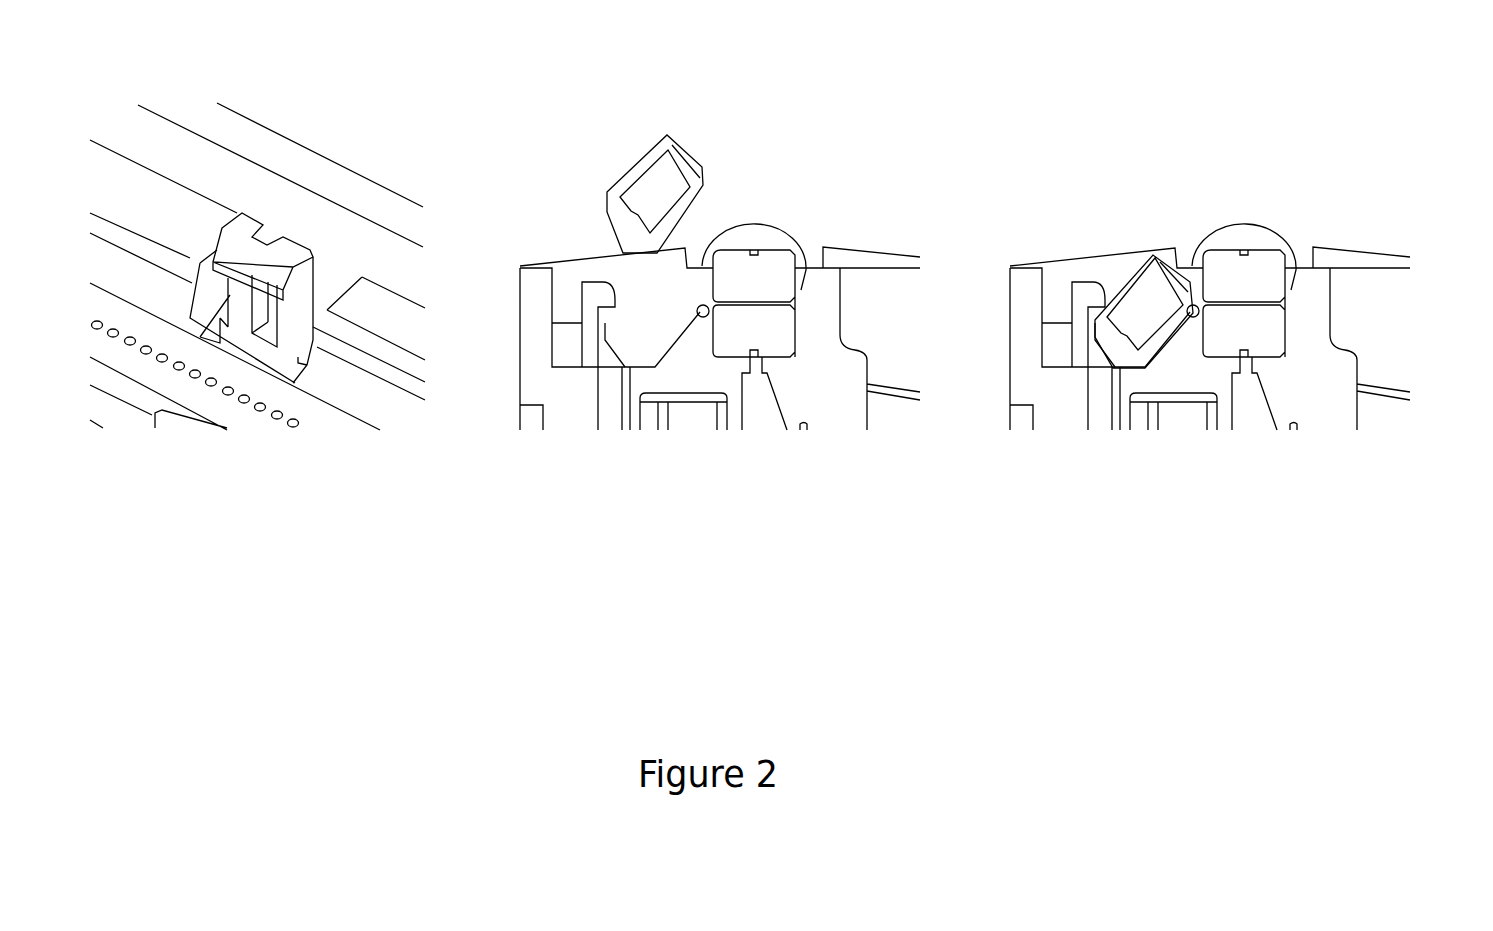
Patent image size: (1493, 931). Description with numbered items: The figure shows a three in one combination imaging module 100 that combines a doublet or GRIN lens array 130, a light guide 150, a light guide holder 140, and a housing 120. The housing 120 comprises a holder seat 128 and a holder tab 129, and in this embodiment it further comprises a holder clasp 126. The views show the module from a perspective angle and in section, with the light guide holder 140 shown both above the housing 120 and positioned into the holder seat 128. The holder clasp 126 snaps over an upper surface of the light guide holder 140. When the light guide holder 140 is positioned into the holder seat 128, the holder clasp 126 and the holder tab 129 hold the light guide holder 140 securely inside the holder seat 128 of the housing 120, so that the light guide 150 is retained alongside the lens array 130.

The three in one combination imaging module 100 is at (737, 92).
The housing 120 is at (233, 187).
The holder clasp 126 is at (255, 270).
The holder seat 128 is at (613, 350).
The holder tab 129 is at (703, 315).
The doublet or GRIN lens array 130 is at (182, 395).
The light guide holder 140 is at (1123, 300).
The light guide 150 is at (1157, 305).